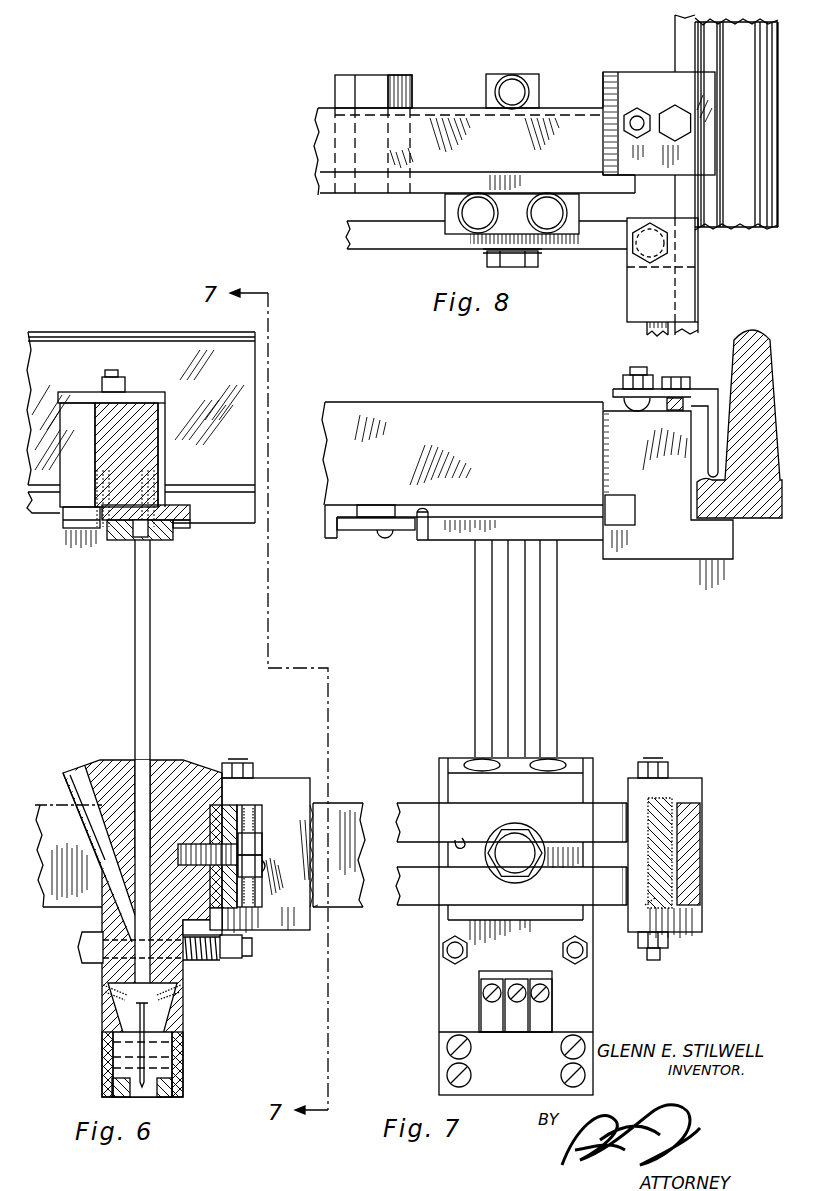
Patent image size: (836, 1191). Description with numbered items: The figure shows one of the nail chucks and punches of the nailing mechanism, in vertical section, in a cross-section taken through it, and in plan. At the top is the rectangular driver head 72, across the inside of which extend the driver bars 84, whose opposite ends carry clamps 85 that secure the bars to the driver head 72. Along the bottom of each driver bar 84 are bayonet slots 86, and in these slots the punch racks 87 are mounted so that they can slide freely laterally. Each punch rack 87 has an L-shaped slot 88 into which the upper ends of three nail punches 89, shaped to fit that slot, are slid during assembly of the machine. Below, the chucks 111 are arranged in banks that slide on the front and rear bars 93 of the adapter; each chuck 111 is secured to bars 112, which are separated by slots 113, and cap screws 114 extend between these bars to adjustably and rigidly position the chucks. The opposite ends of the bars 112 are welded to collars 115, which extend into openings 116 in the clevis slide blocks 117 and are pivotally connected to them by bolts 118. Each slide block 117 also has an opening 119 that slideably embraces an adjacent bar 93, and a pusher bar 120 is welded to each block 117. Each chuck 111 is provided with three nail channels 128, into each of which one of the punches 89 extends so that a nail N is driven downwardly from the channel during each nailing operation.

In FIG. 8, the driver head 72 is at (768, 100).
In FIG. 7, the driver head 72 is at (740, 360).
In FIG. 6, the driver head 72 is at (80, 340).
In FIG. 8, the driver bars 84 is at (568, 112).
In FIG. 7, the driver bars 84 is at (533, 415).
In FIG. 6, the driver bars 84 is at (160, 425).
In FIG. 8, the clamps 85 is at (628, 74).
In FIG. 7, the clamps 85 is at (617, 398).
In FIG. 8, the bayonet slots 86 is at (336, 82).
In FIG. 7, the bayonet slots 86 is at (424, 542).
In FIG. 6, the bayonet slots 86 is at (70, 513).
In FIG. 8, the punch racks 87 is at (462, 186).
In FIG. 7, the punch racks 87 is at (518, 510).
In FIG. 6, the punch racks 87 is at (185, 500).
In FIG. 6, the L-shaped slot 88 is at (152, 545).
In FIG. 7, the nail punches 89 is at (520, 687).
In FIG. 6, the nail punches 89 is at (150, 633).
In FIG. 8, the bars 93 is at (700, 320).
In FIG. 7, the bars 93 is at (700, 855).
In FIG. 6, the bars 93 is at (352, 803).
In FIG. 8, the chucks 111 is at (446, 204).
In FIG. 7, the chucks 111 is at (594, 775).
In FIG. 6, the chucks 111 is at (172, 762).
In FIG. 8, the bars 112 is at (398, 246).
In FIG. 7, the bars 112 is at (513, 813).
In FIG. 6, the bars 112 is at (236, 812).
In FIG. 7, the slots 113 is at (470, 833).
In FIG. 6, the slots 113 is at (240, 832).
In FIG. 8, the cap screws 114 is at (538, 260).
In FIG. 7, the cap screws 114 is at (528, 840).
In FIG. 6, the cap screws 114 is at (262, 842).
In FIG. 8, the collars 115 is at (630, 261).
In FIG. 6, the collars 115 is at (258, 895).
In FIG. 8, the openings 116 is at (668, 248).
In FIG. 6, the openings 116 is at (265, 862).
In FIG. 8, the clevis slide blocks 117 is at (632, 300).
In FIG. 7, the clevis slide blocks 117 is at (686, 928).
In FIG. 6, the clevis slide blocks 117 is at (278, 930).
In FIG. 7, the bolts 118 is at (658, 762).
In FIG. 6, the bolts 118 is at (248, 765).
In FIG. 7, the opening 119 is at (698, 808).
In FIG. 8, the pusher bar 120 is at (657, 336).
In FIG. 7, the pusher bar 120 is at (648, 905).
In FIG. 6, the pusher bar 120 is at (330, 905).
In FIG. 6, the nail channels 128 is at (130, 920).
In FIG. 6, the nail N is at (140, 1012).